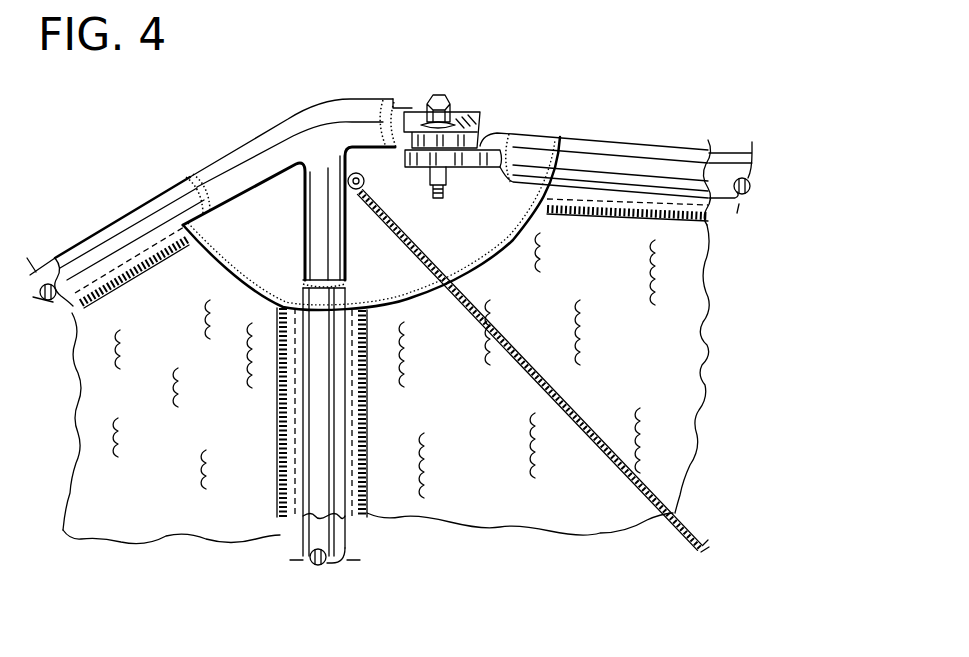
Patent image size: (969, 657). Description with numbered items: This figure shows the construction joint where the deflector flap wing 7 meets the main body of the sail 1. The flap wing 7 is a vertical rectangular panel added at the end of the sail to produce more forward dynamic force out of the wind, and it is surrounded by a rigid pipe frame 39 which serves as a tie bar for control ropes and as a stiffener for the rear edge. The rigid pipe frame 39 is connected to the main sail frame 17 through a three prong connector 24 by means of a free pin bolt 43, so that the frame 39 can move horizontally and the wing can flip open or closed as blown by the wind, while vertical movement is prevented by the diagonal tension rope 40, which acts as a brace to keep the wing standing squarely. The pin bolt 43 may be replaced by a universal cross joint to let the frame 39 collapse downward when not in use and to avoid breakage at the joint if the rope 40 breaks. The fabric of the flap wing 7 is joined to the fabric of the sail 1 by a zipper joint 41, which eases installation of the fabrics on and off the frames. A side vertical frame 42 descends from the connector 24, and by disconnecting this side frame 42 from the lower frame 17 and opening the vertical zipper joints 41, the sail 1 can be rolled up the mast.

The sail 1 is at (177, 453).
The deflector flap wing 7 is at (643, 362).
The main sail frame 17 is at (183, 197).
The three prong connector 24 is at (322, 122).
The rigid pipe frame 39 is at (718, 167).
The diagonal tension rope 40 is at (687, 520).
The zipper joint 41 is at (143, 262).
The side vertical frame 42 is at (318, 460).
The free pin bolt 43 is at (443, 92).